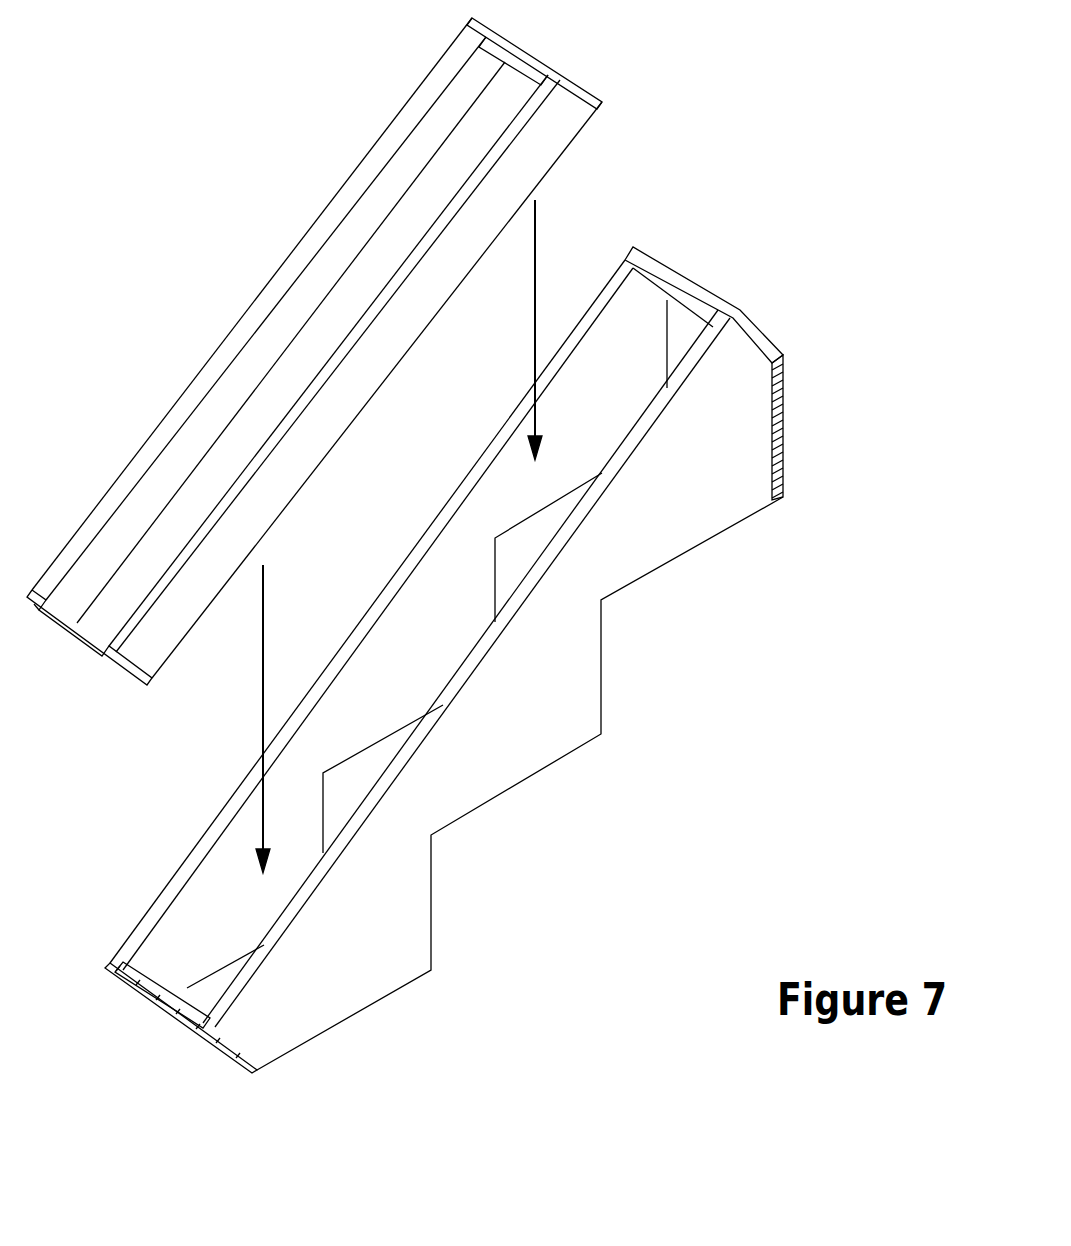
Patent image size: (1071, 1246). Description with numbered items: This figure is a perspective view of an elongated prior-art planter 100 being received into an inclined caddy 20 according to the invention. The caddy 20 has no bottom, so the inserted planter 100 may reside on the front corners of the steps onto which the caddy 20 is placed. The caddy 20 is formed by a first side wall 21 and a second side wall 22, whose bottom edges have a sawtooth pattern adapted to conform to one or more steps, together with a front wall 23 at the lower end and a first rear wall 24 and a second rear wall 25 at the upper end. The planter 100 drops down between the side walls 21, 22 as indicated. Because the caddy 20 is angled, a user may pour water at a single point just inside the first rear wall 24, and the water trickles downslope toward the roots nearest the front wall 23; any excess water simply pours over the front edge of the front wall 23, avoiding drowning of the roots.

The planter 100 is at (257, 302).
The caddy 20 is at (532, 947).
The first side wall 21 is at (208, 830).
The second side wall 22 is at (552, 711).
The front wall 23 is at (182, 1012).
The first rear wall 24 is at (700, 285).
The second rear wall 25 is at (778, 427).